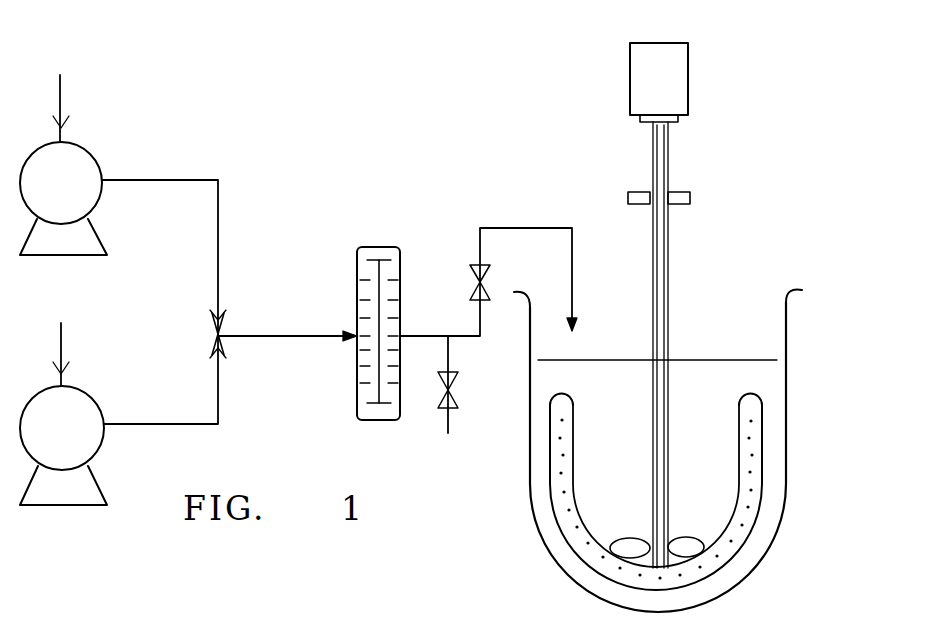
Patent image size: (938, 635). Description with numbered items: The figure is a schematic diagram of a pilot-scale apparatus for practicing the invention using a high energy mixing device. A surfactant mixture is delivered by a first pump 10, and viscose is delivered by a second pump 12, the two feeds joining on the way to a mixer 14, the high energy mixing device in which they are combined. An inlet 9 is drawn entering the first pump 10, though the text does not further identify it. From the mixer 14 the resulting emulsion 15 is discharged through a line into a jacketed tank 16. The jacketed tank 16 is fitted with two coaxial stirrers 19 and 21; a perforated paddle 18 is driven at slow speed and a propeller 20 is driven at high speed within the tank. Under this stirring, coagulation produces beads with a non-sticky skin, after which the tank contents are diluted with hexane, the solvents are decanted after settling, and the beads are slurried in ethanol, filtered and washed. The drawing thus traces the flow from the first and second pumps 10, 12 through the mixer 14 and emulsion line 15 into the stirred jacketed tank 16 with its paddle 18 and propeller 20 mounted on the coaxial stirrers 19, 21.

The feed inlet 9 is at (63, 84).
The first pump 10 is at (84, 192).
The second pump 12 is at (84, 434).
The mixer 14 is at (400, 273).
The emulsion 15 is at (423, 332).
The jacketed tank 16 is at (562, 382).
The perforated paddle 18 is at (764, 427).
The stirrer 19 is at (688, 55).
The propeller 20 is at (700, 537).
The stirrer 21 is at (690, 198).